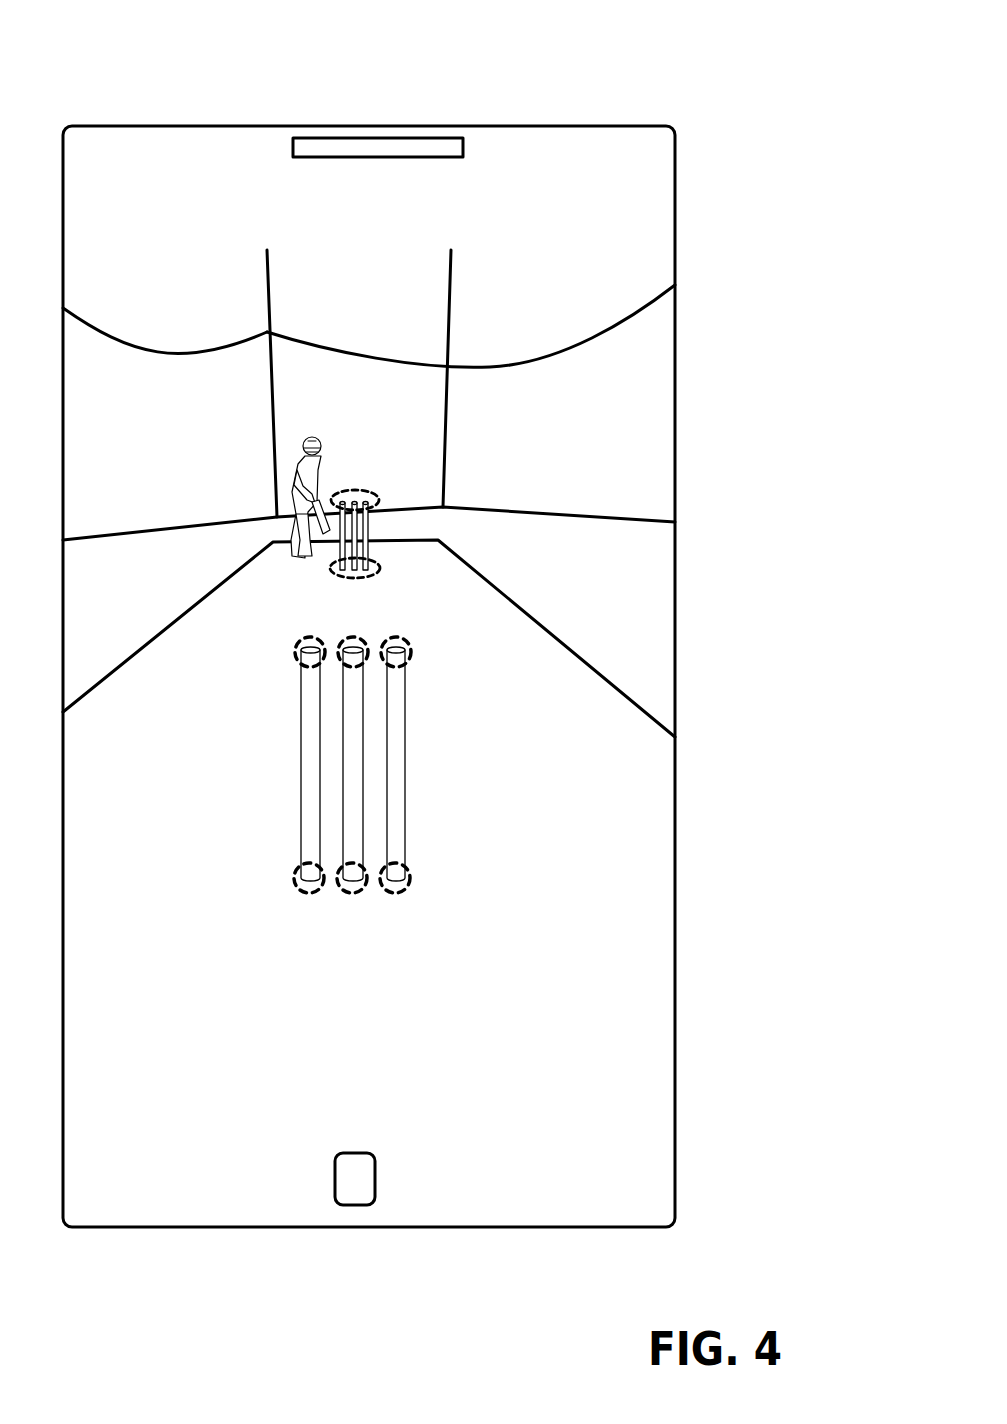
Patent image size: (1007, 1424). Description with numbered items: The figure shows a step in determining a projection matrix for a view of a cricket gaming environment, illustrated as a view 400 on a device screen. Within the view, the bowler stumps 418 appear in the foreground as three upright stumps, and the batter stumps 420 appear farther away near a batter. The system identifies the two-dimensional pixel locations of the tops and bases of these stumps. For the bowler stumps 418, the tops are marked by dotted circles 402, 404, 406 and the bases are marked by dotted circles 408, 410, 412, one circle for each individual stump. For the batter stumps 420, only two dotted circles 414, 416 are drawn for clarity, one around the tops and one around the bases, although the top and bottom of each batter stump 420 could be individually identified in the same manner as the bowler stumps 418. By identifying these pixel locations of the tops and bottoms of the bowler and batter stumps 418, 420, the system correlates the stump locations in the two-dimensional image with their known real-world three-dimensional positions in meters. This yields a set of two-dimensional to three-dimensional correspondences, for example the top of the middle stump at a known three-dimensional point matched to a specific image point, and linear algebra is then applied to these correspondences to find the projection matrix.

The user interface display of augmented reality cricket game 400 is at (787, 107).
The dotted circle 402 is at (296, 656).
The dotted circle 404 is at (346, 642).
The dotted circle 406 is at (400, 641).
The dotted circle 408 is at (302, 893).
The dotted circle 410 is at (355, 895).
The dotted circle 412 is at (398, 894).
The dotted circle 414 is at (379, 497).
The dotted circle 416 is at (366, 566).
The bowler stumps 418 is at (395, 783).
The batter stumps 420 is at (412, 523).